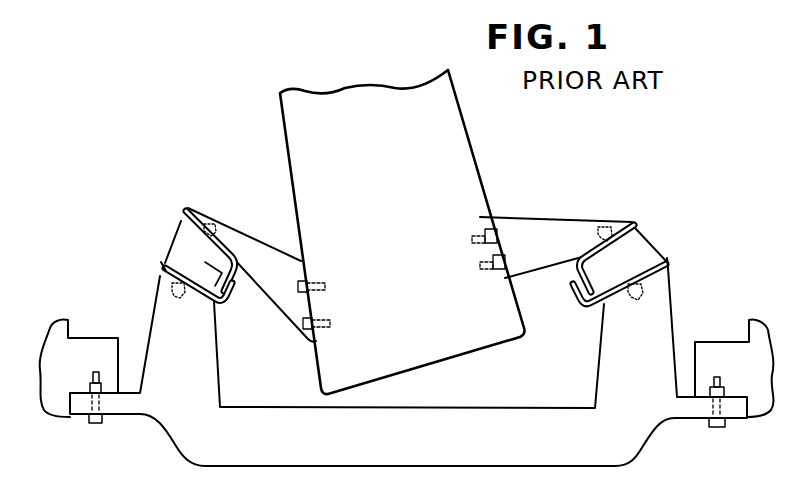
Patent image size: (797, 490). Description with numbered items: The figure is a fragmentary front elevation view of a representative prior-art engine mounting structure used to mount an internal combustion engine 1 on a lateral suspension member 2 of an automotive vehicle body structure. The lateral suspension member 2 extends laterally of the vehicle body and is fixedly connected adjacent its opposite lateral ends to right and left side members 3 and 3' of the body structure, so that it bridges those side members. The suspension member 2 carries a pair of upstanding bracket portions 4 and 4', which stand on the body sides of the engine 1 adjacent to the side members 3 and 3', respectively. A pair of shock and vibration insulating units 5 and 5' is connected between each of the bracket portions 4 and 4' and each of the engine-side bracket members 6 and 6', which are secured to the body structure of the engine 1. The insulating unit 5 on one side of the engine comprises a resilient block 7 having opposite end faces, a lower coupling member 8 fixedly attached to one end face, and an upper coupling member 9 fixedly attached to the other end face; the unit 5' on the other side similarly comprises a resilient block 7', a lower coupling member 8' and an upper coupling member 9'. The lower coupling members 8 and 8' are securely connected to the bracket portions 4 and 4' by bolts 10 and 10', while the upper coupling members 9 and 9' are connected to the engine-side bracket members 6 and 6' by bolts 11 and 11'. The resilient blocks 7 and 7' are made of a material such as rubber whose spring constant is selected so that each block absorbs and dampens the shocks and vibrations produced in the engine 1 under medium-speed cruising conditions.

The internal combustion engine 1 is at (455, 125).
The lateral suspension member 2 is at (465, 408).
The side member 3 is at (79, 359).
The side member 3' is at (734, 362).
The upstanding bracket portion 4 is at (205, 336).
The upstanding bracket portion 4' is at (616, 331).
The shock and vibration insulating unit 5 is at (175, 261).
The shock and vibration insulating unit 5' is at (644, 260).
The engine-side bracket member 6 is at (252, 271).
The engine-side bracket member 6' is at (556, 229).
The resilient block 7 is at (192, 255).
The resilient block 7' is at (626, 254).
The lower coupling member 8 is at (147, 280).
The lower coupling member 8' is at (685, 273).
The upper coupling member 9 is at (200, 236).
The upper coupling member 9' is at (620, 238).
The bolt 10 is at (186, 315).
The bolt 10' is at (632, 313).
The bolt 11 is at (212, 206).
The bolt 11' is at (606, 210).